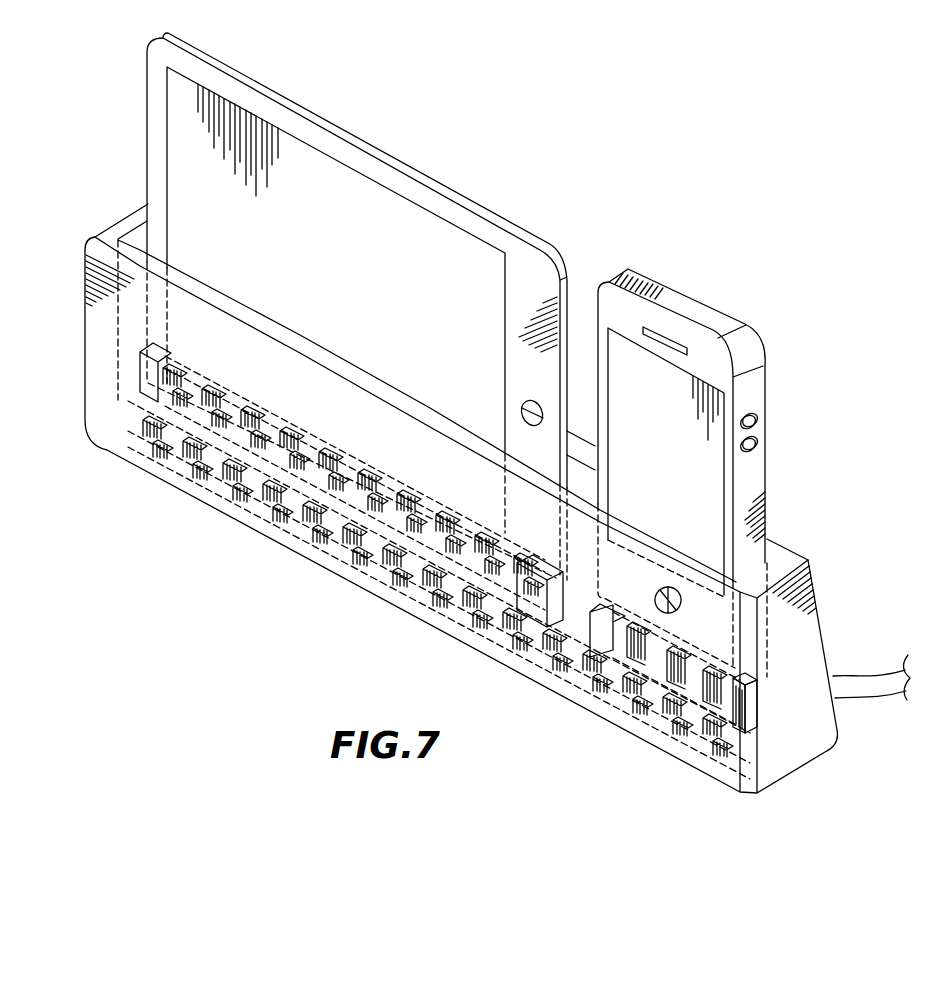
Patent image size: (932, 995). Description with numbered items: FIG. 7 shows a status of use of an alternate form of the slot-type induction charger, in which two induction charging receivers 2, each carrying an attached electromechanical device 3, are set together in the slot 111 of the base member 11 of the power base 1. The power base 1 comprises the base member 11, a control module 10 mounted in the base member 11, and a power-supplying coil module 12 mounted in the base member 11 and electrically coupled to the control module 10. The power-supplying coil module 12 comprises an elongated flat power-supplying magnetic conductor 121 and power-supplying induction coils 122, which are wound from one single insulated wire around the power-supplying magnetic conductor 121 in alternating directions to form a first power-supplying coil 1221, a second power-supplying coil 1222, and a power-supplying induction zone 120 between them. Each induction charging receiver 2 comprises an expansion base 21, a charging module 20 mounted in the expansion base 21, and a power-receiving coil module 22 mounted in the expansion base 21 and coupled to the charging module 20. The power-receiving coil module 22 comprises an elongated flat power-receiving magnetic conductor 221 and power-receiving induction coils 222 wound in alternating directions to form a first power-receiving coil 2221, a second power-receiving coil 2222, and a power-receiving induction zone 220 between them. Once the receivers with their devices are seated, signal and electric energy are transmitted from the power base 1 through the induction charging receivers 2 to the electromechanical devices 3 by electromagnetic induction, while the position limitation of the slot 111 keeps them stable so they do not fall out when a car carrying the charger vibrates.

The power base 1 is at (832, 557).
The control module 10 is at (150, 458).
The base member 11 is at (808, 624).
The slot 111 is at (133, 236).
The power-supplying coil module 12 is at (200, 462).
The power-supplying induction zone 120 is at (258, 506).
The power-supplying magnetic conductor 121 is at (127, 424).
The power-supplying induction coils 122 is at (240, 600).
The first power-supplying coil 1221 is at (245, 485).
The second power-supplying coil 1222 is at (303, 516).
The induction charging receiver 2 is at (793, 708).
The charging module 20 is at (760, 727).
The expansion base 21 is at (777, 731).
The power-receiving coil module 22 is at (760, 745).
The power-receiving induction zone 220 is at (662, 710).
The power-receiving magnetic conductor 221 is at (715, 755).
The power-receiving induction coils 222 is at (570, 777).
The first power-receiving coil 2221 is at (600, 673).
The second power-receiving coil 2222 is at (685, 689).
The electromechanical device 3 is at (616, 306).